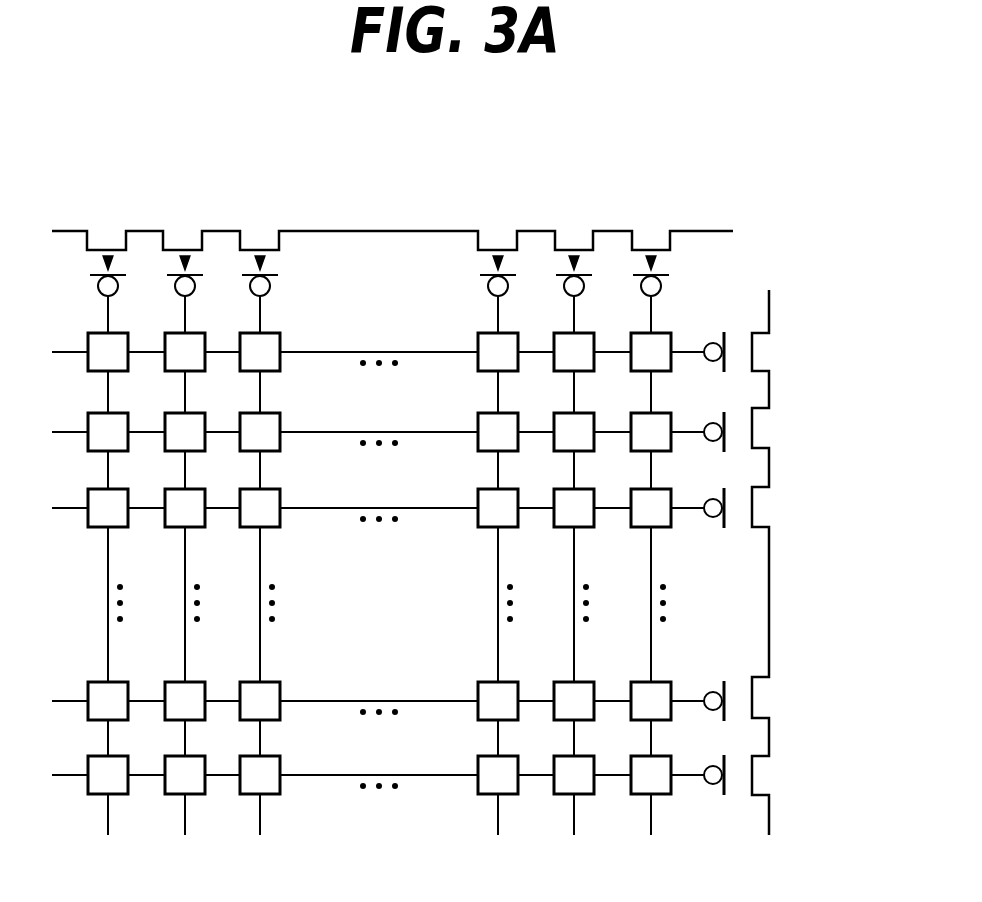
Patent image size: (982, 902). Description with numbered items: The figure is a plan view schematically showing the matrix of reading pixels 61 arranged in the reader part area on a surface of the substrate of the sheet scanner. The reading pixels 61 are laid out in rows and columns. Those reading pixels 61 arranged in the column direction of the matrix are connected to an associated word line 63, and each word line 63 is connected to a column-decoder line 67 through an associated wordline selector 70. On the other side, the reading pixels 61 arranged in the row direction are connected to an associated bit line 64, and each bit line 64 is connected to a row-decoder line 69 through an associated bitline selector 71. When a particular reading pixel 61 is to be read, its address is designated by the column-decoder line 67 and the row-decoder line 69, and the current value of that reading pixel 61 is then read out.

The reading pixel 61 is at (129, 358).
The word line 63 is at (688, 351).
The bit line 64 is at (110, 326).
The column-decoder line 67 is at (771, 299).
The row-decoder line 69 is at (705, 231).
The wordline selector 70 is at (742, 349).
The bitline selector 71 is at (109, 262).